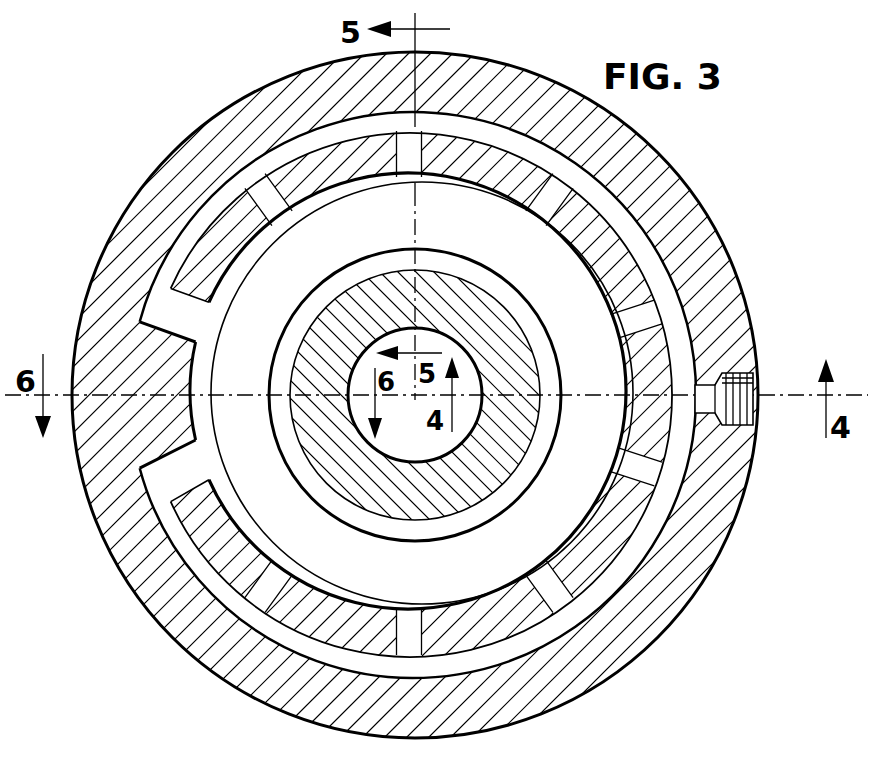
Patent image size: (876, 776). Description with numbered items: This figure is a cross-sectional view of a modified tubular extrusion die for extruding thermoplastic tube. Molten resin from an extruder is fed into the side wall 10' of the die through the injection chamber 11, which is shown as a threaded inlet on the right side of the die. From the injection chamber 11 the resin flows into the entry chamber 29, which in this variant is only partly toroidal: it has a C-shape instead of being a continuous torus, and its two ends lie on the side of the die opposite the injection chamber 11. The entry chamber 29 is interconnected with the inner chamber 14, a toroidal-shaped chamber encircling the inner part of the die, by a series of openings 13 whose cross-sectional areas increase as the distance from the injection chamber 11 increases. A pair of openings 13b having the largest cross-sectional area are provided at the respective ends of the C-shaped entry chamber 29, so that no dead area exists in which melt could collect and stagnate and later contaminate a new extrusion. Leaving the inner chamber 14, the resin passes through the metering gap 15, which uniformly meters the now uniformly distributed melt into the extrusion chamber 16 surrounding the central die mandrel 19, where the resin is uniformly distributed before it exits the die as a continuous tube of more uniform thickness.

The side wall 10' is at (439, 395).
The injection chamber 11 is at (753, 390).
The openings 13 is at (284, 201).
The openings having the largest cross-sectional area 13b is at (192, 320).
The inner chamber 14 is at (570, 541).
The metering gap 15 is at (552, 283).
The extrusion chamber 16 is at (440, 262).
The die mandrel 19 is at (350, 490).
The entry chamber 29 is at (668, 505).